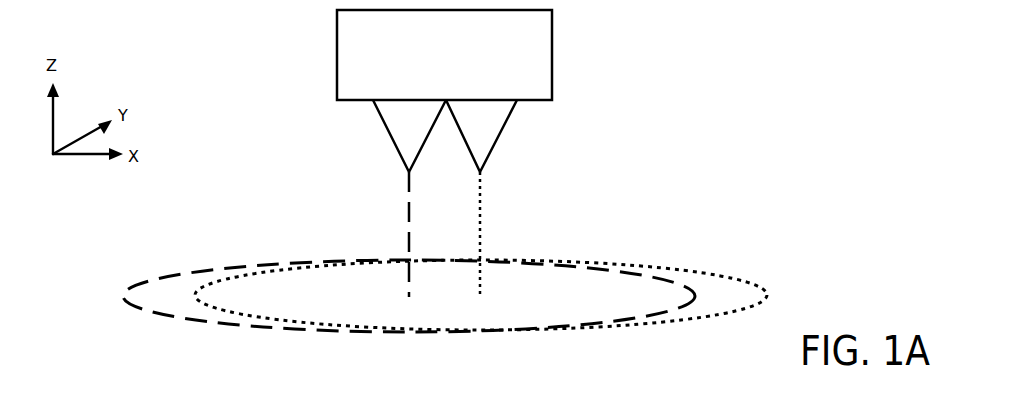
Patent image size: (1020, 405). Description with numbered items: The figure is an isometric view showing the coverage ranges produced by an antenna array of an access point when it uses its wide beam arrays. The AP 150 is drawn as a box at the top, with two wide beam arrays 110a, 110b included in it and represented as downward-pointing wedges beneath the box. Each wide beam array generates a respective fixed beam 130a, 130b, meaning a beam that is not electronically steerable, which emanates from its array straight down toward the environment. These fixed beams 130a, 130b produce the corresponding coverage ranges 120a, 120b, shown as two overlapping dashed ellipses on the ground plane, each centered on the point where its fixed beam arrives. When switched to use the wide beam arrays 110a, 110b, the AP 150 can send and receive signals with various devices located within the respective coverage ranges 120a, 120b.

The AP 150 is at (444, 55).
The wide beam array 110a is at (386, 126).
The wide beam array 110b is at (500, 133).
The fixed beam 130a is at (408, 196).
The fixed beam 130b is at (482, 197).
The coverage range 120a is at (190, 269).
The coverage range 120b is at (732, 278).